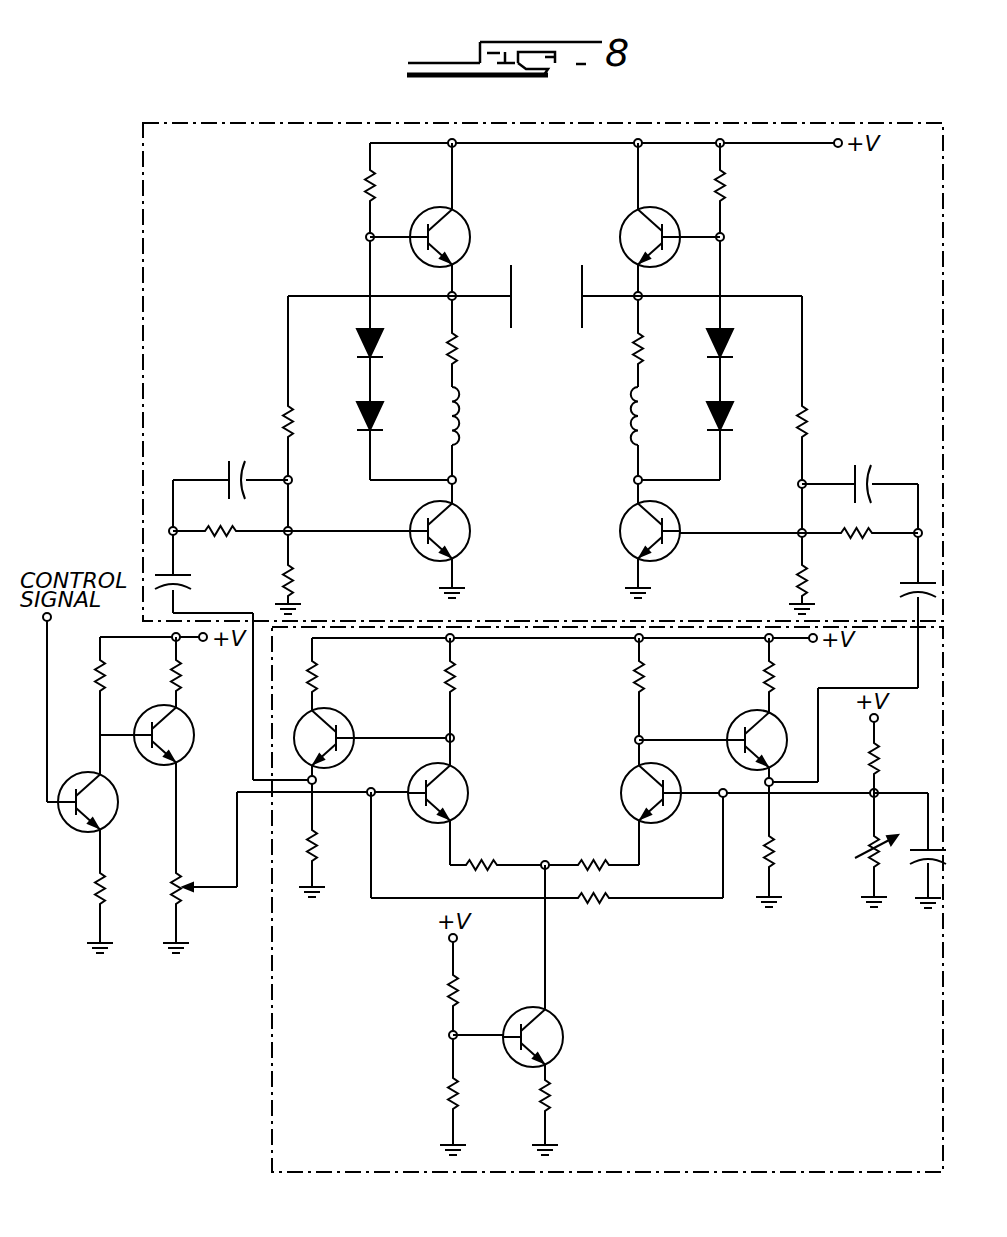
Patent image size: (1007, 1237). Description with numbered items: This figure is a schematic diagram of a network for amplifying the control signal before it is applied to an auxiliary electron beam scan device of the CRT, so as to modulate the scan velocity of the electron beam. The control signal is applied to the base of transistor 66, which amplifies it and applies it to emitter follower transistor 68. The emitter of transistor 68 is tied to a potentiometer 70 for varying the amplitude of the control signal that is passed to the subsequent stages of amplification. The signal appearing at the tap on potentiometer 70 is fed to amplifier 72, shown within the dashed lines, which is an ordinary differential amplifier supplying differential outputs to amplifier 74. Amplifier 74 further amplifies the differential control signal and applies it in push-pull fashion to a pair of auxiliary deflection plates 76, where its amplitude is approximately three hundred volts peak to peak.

The transistor 66 is at (82, 832).
The emitter follower transistor 68 is at (195, 735).
The potentiometer 70 is at (186, 884).
The amplifier 72 is at (268, 972).
The amplifier 74 is at (142, 332).
The auxiliary deflection plates 76 is at (581, 316).